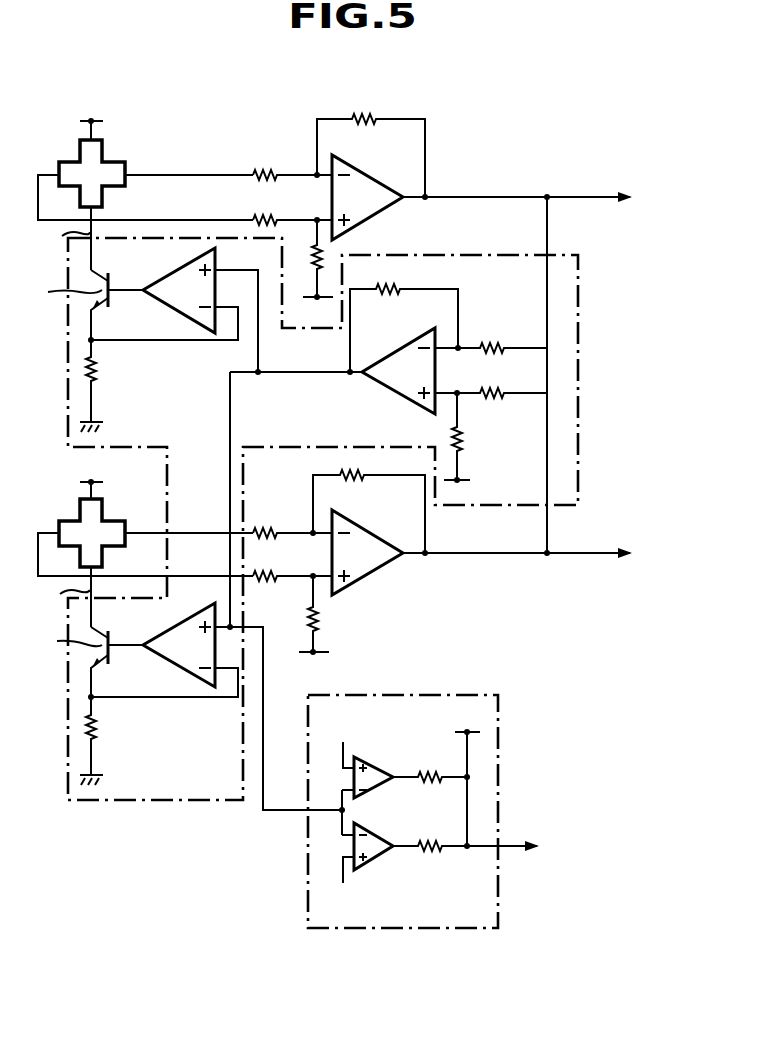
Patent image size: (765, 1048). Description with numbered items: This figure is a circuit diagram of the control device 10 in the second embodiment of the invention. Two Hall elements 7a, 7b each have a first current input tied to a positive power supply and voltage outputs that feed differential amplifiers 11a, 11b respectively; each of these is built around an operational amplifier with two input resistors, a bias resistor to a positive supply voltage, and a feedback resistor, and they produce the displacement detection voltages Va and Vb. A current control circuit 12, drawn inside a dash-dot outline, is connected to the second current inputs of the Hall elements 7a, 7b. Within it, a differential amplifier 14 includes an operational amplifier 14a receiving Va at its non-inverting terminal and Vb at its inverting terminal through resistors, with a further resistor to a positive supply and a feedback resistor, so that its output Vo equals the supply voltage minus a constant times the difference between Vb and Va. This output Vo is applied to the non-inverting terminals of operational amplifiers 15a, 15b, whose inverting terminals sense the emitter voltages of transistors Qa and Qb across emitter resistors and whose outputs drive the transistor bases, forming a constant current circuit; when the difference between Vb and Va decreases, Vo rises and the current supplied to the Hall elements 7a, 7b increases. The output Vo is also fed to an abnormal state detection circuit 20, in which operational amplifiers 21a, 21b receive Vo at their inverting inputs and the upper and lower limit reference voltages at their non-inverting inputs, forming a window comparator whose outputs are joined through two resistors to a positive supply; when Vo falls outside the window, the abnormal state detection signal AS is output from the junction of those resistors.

The Hall element 7a is at (97, 513).
The Hall element 7b is at (97, 160).
The control device 10 is at (448, 124).
The differential amplifier 11a is at (407, 572).
The differential amplifier 11b is at (450, 172).
The current control circuit 12 is at (580, 362).
The differential amplifier 14 is at (366, 395).
The operational amplifier 14a is at (403, 387).
The operational amplifier 15a is at (180, 633).
The operational amplifier 15b is at (165, 288).
The abnormal state detection circuit 20 is at (335, 928).
The operational amplifier 21a is at (385, 762).
The operational amplifier 21b is at (375, 862).